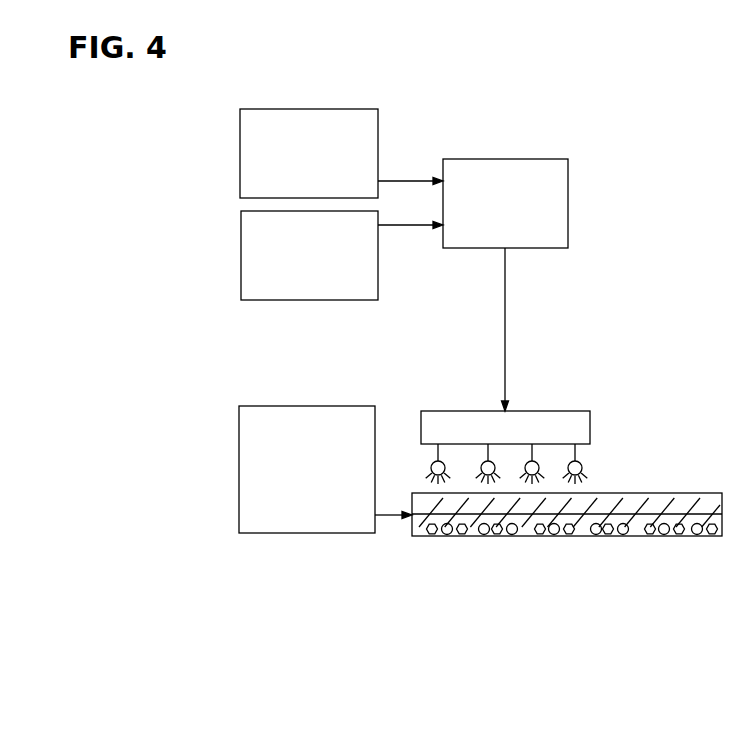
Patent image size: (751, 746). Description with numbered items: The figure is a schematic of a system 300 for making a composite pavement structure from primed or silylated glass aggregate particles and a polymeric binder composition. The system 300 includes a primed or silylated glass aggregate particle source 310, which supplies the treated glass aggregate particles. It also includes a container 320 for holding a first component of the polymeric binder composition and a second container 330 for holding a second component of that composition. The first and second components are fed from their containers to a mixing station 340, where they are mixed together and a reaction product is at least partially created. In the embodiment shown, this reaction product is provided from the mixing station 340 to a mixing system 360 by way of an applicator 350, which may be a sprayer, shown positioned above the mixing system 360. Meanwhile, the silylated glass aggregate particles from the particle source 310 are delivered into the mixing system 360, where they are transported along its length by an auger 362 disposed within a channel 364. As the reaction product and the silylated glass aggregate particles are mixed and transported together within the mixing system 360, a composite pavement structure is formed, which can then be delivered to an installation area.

The system 300 is at (178, 190).
The primed or silylated glass aggregate particle source 310 is at (292, 480).
The container 320 is at (294, 164).
The container 330 is at (294, 266).
The mixing station 340 is at (490, 214).
The applicator 350 is at (490, 438).
The mixing system 360 is at (567, 555).
The auger 362 is at (469, 513).
The channel 364 is at (567, 531).